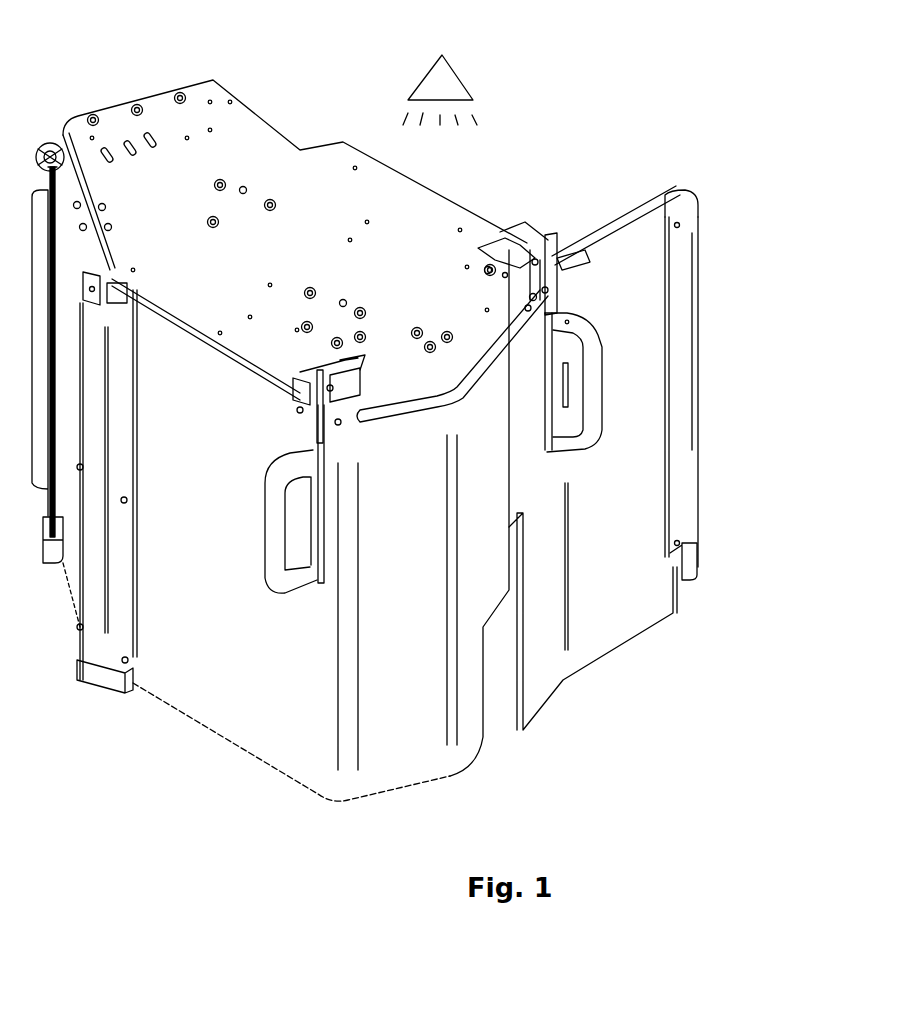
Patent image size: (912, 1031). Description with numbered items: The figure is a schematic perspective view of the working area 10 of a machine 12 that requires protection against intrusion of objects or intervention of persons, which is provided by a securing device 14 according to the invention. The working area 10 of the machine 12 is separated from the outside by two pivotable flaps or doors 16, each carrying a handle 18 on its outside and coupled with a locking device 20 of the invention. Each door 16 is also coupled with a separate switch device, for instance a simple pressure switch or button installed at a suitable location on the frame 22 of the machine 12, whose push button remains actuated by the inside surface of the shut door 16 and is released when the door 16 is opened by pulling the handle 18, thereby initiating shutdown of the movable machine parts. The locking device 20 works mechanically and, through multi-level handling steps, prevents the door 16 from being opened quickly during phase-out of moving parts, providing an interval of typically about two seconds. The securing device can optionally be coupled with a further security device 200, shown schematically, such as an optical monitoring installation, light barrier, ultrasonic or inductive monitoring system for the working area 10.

The working area 10 is at (137, 549).
The machine 12 is at (89, 549).
The securing device 14 is at (555, 230).
The pivotable flaps or doors 16 is at (223, 578).
The handles 18 is at (267, 490).
The locking devices 20 is at (511, 222).
The frame 22 is at (253, 133).
The further security device 200 is at (455, 68).